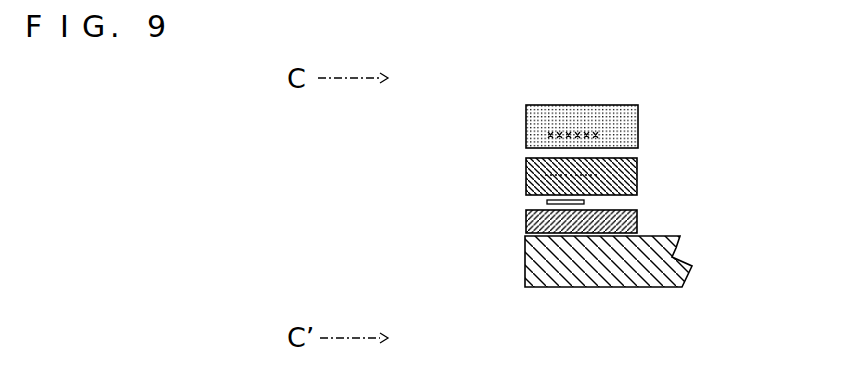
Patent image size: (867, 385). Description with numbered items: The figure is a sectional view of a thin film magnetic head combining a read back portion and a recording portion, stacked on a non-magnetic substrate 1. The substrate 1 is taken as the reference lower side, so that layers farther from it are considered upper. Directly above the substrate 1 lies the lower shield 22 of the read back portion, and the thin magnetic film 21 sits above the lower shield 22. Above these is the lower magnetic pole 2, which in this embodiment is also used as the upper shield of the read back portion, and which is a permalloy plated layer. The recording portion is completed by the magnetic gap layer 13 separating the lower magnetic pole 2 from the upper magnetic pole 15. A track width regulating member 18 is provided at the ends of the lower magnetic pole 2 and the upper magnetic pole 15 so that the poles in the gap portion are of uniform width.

The non-magnetic substrate 1 is at (665, 265).
The lower magnetic pole 2 is at (625, 188).
The magnetic gap layer 13 is at (524, 151).
The upper magnetic pole 15 is at (624, 134).
The track width regulating member 18 is at (541, 143).
The magnetic film 21 is at (547, 203).
The lower shield 22 is at (625, 223).